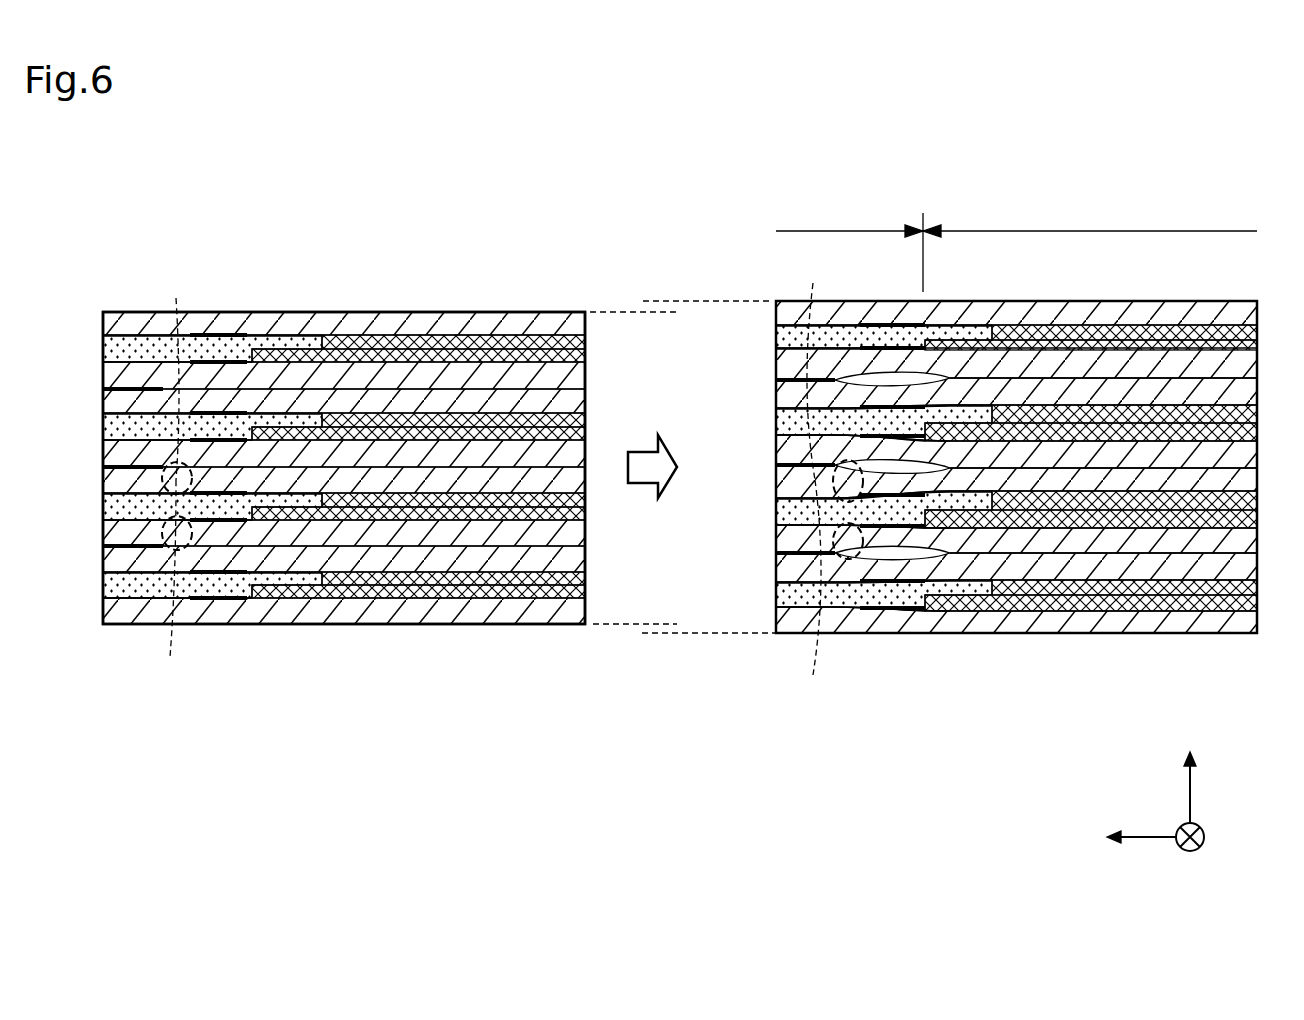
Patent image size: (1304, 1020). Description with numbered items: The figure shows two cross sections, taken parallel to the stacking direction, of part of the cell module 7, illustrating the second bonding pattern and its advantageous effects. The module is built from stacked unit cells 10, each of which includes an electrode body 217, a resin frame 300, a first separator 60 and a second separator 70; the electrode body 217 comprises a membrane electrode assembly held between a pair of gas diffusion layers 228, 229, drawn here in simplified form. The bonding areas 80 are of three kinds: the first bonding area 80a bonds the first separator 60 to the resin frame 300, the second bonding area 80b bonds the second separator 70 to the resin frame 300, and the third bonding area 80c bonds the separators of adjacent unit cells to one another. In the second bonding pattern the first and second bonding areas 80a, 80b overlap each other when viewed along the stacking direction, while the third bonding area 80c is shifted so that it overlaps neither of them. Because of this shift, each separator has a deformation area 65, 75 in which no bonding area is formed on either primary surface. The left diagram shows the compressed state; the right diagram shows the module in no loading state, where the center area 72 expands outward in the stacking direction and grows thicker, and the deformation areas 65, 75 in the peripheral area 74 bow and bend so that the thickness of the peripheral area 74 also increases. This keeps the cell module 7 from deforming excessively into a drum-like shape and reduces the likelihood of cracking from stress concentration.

The cell module 7 is at (100, 169).
The unit cell 10 is at (100, 313).
The first separator 60 is at (103, 482).
The second separator 70 is at (103, 548).
The resin frame 300 is at (103, 515).
The deformation area 65 is at (493, 369).
The deformation area 75 is at (492, 591).
The bonding area 80 is at (482, 598).
The first bonding area 80a is at (212, 500).
The second bonding area 80b is at (237, 525).
The third bonding area 80c is at (116, 470).
The electrode body 217 is at (591, 585).
The gas diffusion layer 228 is at (493, 590).
The gas diffusion layer 229 is at (433, 603).
The center area 72 is at (1090, 221).
The peripheral area 74 is at (849, 249).